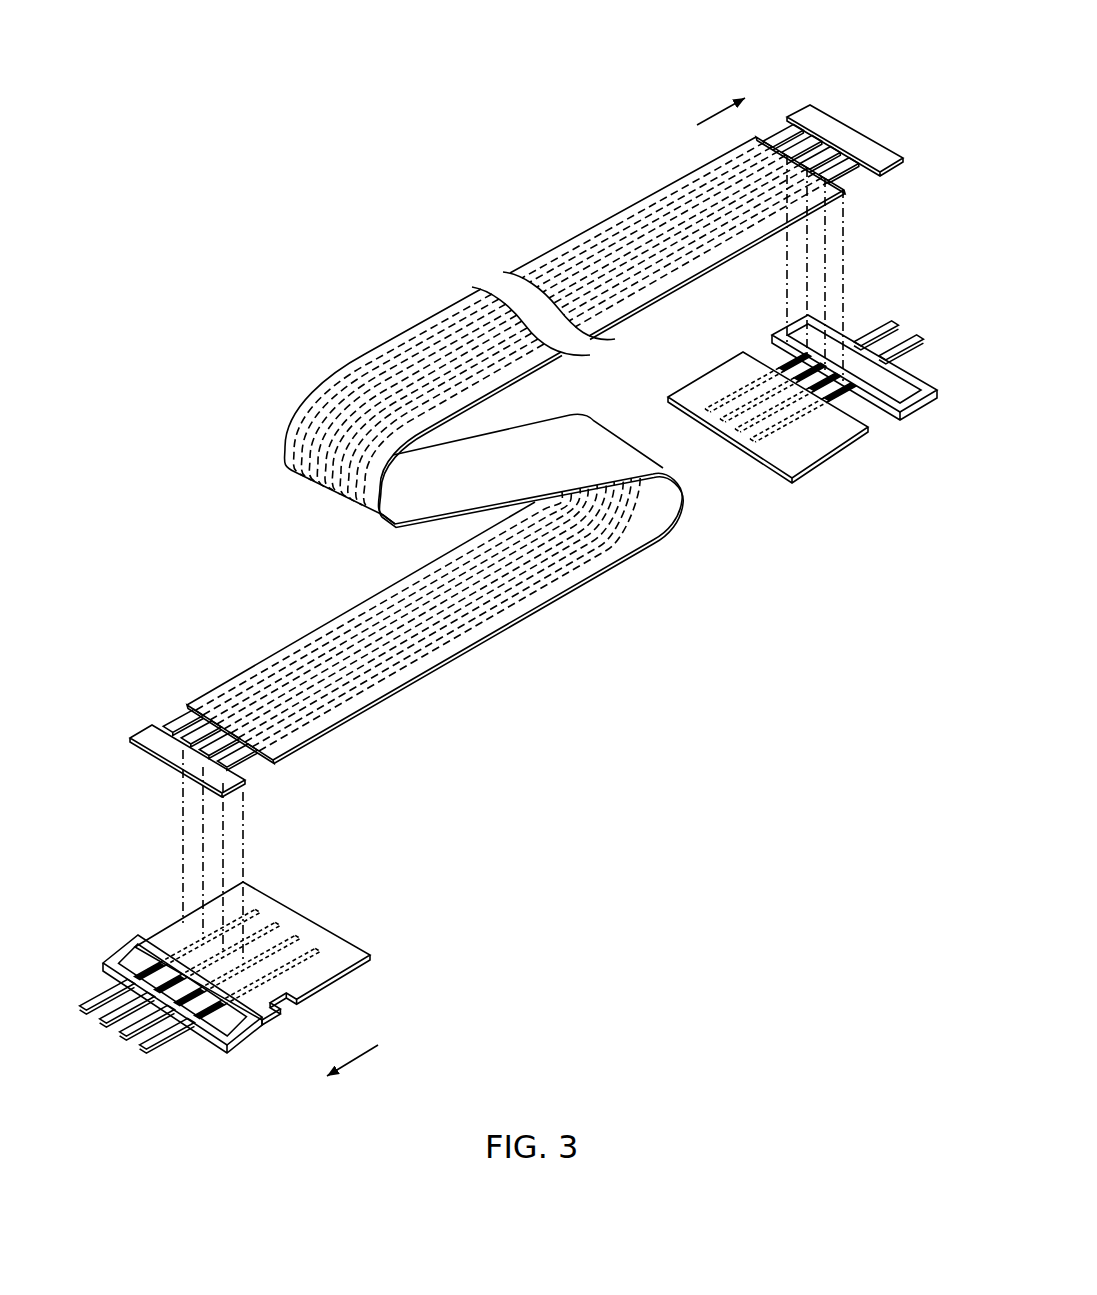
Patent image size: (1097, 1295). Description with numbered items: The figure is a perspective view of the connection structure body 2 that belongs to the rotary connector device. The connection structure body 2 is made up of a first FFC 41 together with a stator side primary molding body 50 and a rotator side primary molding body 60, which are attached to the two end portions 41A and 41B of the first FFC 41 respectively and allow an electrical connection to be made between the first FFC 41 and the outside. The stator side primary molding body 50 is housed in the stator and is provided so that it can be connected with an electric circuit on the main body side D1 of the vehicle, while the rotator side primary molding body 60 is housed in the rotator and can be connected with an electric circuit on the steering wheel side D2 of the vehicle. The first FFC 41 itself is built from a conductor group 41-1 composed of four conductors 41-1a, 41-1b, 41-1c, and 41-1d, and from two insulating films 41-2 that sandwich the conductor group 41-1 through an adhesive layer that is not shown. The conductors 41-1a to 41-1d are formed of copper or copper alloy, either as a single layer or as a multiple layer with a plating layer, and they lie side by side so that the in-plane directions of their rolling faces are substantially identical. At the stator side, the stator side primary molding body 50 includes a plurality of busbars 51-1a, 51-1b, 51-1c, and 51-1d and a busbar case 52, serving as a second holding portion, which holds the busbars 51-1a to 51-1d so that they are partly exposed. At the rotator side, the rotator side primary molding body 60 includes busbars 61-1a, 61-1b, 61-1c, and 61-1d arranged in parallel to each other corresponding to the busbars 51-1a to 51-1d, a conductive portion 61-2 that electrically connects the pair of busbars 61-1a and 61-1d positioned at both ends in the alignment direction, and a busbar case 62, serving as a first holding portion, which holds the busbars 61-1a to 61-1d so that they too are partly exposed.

The connection structure body 2 is at (508, 411).
The first FFC 41 is at (508, 411).
The conductor group 41-1 is at (513, 462).
The conductor 41-1a is at (636, 649).
The conductor 41-1b is at (380, 658).
The conductor 41-1c is at (398, 625).
The conductor 41-1d is at (430, 582).
The insulating film 41-2 is at (630, 550).
The end portion 41A is at (149, 724).
The end portion 41B is at (800, 103).
The stator side primary molding body 50 is at (263, 1003).
The busbar 51-1a is at (167, 1045).
The busbar 51-1b is at (133, 1032).
The busbar 51-1c is at (113, 1020).
The busbar 51-1d is at (105, 993).
The busbar case 52 is at (323, 983).
The rotator side primary molding body 60 is at (816, 380).
The busbar 61-1a is at (803, 427).
The busbar 61-1b is at (897, 340).
The busbar 61-1c is at (873, 330).
The busbar 61-1d is at (730, 387).
The conductive portion 61-2 is at (735, 432).
The busbar case 62 is at (840, 447).
The main body side D1 is at (363, 1060).
The steering wheel side D2 is at (722, 112).